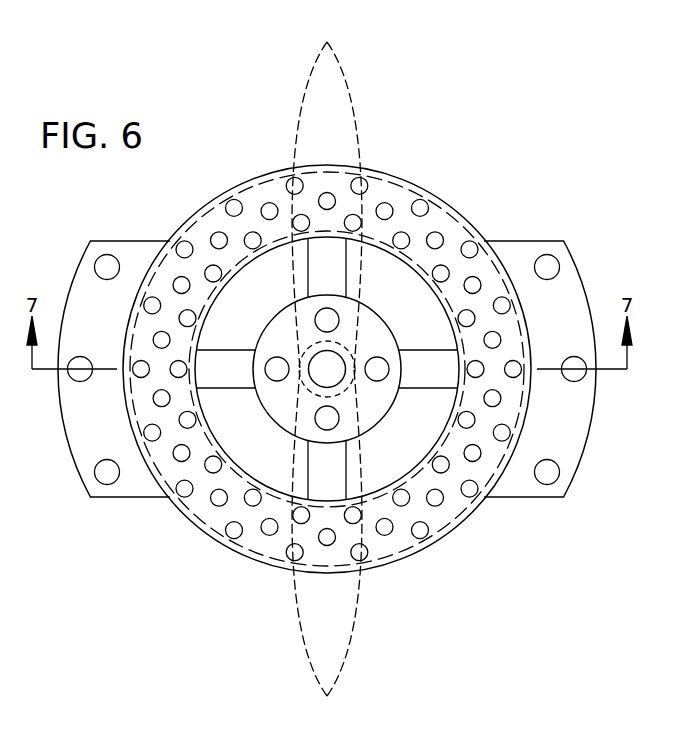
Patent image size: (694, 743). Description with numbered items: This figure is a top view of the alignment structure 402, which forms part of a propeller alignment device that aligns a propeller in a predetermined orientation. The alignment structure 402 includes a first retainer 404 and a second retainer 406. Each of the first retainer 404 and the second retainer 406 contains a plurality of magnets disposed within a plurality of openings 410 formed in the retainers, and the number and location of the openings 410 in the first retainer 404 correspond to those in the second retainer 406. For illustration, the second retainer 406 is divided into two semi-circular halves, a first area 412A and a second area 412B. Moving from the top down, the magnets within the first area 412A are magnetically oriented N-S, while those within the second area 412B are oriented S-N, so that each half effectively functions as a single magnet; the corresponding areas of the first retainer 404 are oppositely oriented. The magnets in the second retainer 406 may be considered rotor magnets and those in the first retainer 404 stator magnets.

The alignment structure 402 is at (495, 533).
The first retainer 404 is at (568, 292).
The second retainer 406 is at (467, 218).
The openings 410 is at (268, 208).
The first area 412A is at (402, 182).
The second area 412B is at (190, 222).